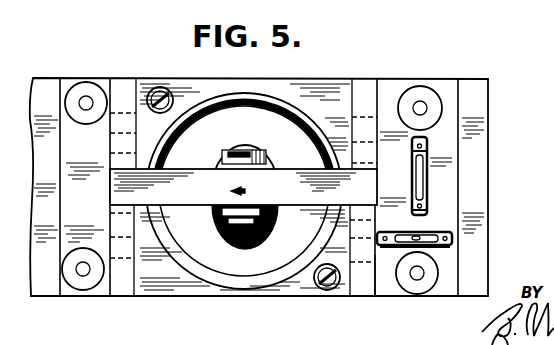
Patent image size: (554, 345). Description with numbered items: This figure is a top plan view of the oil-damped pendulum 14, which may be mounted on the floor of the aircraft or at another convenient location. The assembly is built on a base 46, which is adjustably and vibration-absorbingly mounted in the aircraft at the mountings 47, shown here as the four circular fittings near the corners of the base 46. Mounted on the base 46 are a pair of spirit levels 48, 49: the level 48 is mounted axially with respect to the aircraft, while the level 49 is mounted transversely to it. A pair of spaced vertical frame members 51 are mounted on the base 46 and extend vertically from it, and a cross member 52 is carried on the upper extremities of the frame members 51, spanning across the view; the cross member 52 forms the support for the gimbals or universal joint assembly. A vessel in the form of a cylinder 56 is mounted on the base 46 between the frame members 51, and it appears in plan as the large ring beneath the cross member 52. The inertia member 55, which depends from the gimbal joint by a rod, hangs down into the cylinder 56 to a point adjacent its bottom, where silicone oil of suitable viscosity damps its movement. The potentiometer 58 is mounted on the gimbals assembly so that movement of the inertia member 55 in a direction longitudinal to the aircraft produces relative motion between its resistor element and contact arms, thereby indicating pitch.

The oil-damped pendulum 14 is at (185, 77).
The base 46 is at (377, 294).
The vibration absorbing mounting 47 is at (85, 87).
The spirit level 48 is at (440, 233).
The spirit level 49 is at (428, 154).
The vertical frame members 51 is at (121, 82).
The cross member 52 is at (220, 200).
The inertia member 55 is at (251, 150).
The cylinder 56 is at (280, 98).
The potentiometer 58 is at (216, 166).